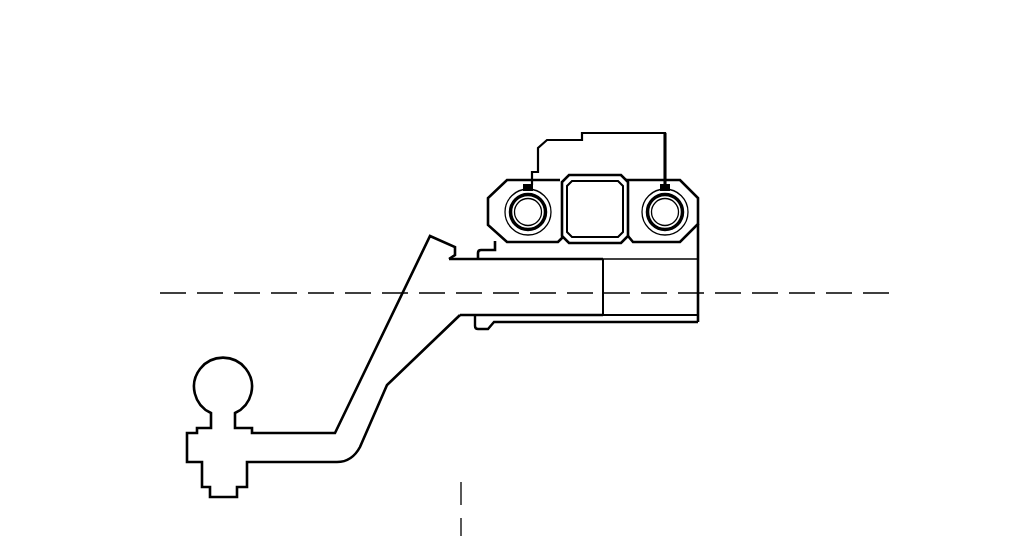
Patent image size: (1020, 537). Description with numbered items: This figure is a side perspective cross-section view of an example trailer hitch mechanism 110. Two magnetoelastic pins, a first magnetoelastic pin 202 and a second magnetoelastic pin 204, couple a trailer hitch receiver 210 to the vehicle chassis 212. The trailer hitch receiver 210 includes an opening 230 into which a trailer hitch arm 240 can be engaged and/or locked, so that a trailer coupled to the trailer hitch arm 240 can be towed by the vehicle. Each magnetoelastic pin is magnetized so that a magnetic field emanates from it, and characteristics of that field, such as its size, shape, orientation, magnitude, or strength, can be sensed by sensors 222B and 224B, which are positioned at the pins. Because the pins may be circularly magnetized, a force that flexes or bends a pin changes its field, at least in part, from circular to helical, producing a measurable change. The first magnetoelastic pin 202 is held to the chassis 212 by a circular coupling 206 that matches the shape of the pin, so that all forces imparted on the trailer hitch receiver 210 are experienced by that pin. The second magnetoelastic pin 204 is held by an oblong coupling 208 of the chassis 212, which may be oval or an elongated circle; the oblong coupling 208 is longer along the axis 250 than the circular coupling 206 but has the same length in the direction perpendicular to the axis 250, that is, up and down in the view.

The trailer hitch mechanism 110 is at (177, 160).
The first magnetoelastic pin 202 is at (683, 208).
The second magnetoelastic pin 204 is at (512, 187).
The circular coupling 206 is at (687, 217).
The oblong coupling 208 is at (503, 213).
The trailer hitch receiver 210 is at (625, 323).
The vehicle chassis 212 is at (588, 132).
The sensor 222B is at (663, 184).
The sensor 224B is at (522, 184).
The opening 230 is at (665, 282).
The trailer hitch arm 240 is at (195, 430).
The axis 250 is at (160, 293).